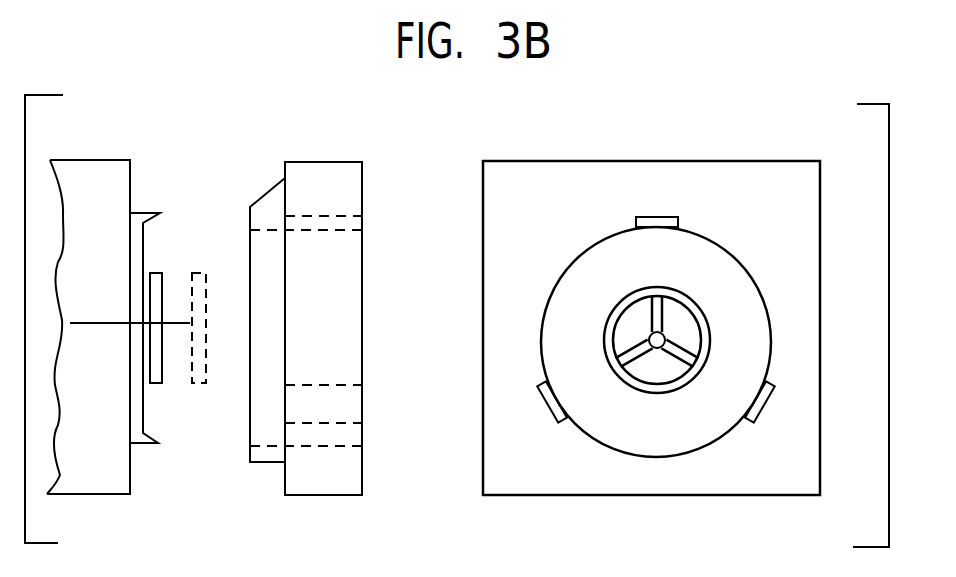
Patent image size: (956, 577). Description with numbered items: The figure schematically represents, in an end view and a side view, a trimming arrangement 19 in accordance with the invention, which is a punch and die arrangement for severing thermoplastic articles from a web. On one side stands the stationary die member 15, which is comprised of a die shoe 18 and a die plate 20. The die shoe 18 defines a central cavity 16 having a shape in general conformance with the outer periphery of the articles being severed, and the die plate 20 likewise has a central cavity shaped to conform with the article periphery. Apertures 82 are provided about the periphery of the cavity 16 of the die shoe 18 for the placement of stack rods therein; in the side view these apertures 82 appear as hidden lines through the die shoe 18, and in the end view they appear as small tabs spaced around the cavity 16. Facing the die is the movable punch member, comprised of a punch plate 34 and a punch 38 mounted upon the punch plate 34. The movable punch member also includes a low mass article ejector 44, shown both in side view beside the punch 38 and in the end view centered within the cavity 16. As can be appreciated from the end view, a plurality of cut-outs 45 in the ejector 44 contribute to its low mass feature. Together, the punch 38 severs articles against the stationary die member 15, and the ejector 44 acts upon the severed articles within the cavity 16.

The stationary die member 15 is at (270, 472).
The central cavity 16 is at (589, 249).
The die shoe 18 is at (320, 162).
The trimming arrangement 19 is at (212, 186).
The die plate 20 is at (267, 192).
The punch plate 34 is at (88, 496).
The punch 38 is at (145, 258).
The low mass article ejector 44 is at (155, 385).
The cut-outs 45 is at (632, 317).
The apertures 82 is at (308, 222).